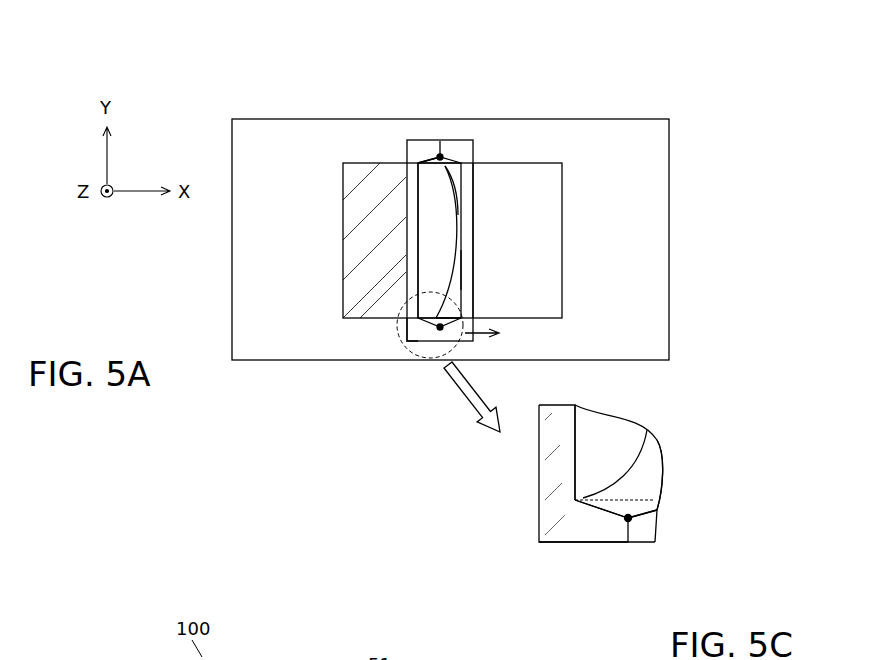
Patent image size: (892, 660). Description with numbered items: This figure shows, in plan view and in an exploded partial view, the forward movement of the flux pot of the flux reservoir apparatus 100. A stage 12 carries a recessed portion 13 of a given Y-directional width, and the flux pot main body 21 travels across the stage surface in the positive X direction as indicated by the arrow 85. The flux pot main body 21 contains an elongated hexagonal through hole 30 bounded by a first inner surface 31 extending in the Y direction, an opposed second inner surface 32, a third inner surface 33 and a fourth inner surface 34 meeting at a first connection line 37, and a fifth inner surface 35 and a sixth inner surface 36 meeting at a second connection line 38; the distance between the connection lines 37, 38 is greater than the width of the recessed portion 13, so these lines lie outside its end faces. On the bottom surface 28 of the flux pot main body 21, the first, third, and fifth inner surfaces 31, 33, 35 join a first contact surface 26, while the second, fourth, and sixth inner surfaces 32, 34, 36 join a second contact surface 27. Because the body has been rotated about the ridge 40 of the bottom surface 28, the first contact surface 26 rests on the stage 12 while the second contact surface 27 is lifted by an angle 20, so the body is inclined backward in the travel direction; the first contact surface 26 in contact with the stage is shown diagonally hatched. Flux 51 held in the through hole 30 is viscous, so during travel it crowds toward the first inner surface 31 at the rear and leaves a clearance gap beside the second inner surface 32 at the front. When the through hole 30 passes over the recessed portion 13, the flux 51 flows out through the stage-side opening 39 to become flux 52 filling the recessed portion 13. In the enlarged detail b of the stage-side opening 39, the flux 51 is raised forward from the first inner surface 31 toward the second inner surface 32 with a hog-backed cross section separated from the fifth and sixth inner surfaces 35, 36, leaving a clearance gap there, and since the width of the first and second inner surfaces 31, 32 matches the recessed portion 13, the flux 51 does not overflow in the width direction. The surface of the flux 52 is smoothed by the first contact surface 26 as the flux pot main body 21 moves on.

In FIG. 5A, the stage 12 is at (670, 208).
In FIG. 5A, the flux reservoir apparatus 100 is at (683, 92).
In FIG. 5A, the recessed portion 13 is at (552, 163).
In FIG. 5C, the recessed portion 13 is at (660, 478).
In FIG. 5A, the flux 52 is at (375, 160).
In FIG. 5A, the angle 20 is at (481, 142).
In FIG. 5C, the angle 20 is at (530, 453).
In FIG. 5A, the first connection line 37 is at (450, 162).
In FIG. 5A, the fourth inner surface 34 is at (443, 156).
In FIG. 5A, the third inner surface 33 is at (432, 152).
In FIG. 5A, the flux pot main body 21 is at (478, 160).
In FIG. 5C, the flux pot main body 21 is at (553, 528).
In FIG. 5A, the second inner surface 32 is at (456, 235).
In FIG. 5A, the flux 51 is at (450, 190).
In FIG. 5C, the flux 51 is at (612, 428).
In FIG. 5A, the second contact surface 27 is at (470, 268).
In FIG. 5C, the second contact surface 27 is at (657, 525).
In FIG. 5A, the sixth inner surface 36 is at (462, 300).
In FIG. 5C, the sixth inner surface 36 is at (660, 500).
In FIG. 5A, the arrow 85 is at (500, 342).
In FIG. 5A, the fifth inner surface 35 is at (432, 343).
In FIG. 5C, the fifth inner surface 35 is at (593, 506).
In FIG. 5A, the detail region b is at (440, 343).
In FIG. 5A, the first contact surface 26 is at (349, 366).
In FIG. 5C, the first contact surface 26 is at (512, 524).
In FIG. 5A, the bottom surface 28 is at (405, 345).
In FIG. 5C, the bottom surface 28 is at (555, 515).
In FIG. 5A, the first inner surface 31 is at (418, 241).
In FIG. 5C, the first inner surface 31 is at (574, 470).
In FIG. 5C, the elongated hexagonal through hole 30 is at (673, 461).
In FIG. 5C, the stage-side opening 39 is at (672, 455).
In FIG. 5C, the second connection line 38 is at (630, 528).
In FIG. 5C, the ridge 40 is at (635, 547).